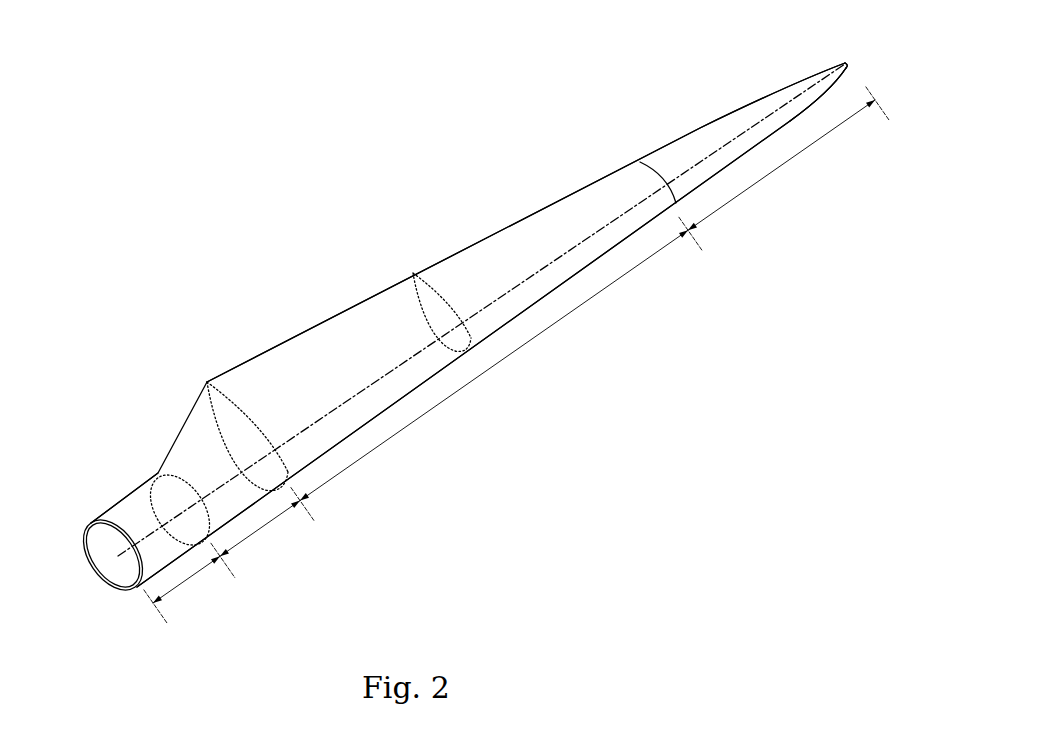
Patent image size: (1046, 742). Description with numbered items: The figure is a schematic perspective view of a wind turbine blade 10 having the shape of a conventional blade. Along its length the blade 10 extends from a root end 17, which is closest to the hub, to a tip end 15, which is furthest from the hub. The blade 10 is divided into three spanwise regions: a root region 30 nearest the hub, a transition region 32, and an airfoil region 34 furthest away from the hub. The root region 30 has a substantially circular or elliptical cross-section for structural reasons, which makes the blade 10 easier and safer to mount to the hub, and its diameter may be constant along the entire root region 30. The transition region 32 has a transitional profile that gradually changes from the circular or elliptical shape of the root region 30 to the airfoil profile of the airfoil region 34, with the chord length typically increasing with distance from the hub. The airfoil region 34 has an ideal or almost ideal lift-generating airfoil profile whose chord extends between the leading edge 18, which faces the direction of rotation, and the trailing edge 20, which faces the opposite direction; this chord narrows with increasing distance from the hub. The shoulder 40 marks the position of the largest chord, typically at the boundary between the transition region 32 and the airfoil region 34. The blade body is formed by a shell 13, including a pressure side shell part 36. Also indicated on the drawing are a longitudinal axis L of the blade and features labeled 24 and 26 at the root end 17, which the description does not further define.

The wind turbine blade 10 is at (334, 223).
The shell 13 is at (181, 432).
The tip end 15 is at (848, 65).
The root end 17 is at (88, 548).
The leading edge 18 is at (616, 246).
The trailing edge 20 is at (533, 213).
The root section 24 is at (109, 507).
The root end face / rim 26 is at (103, 579).
The root region 30 is at (187, 582).
The transition region 32 is at (262, 530).
The airfoil region 34 is at (533, 340).
The pressure side shell part 36 is at (767, 176).
The shoulder 40 is at (207, 380).
The longitudinal axis L is at (118, 556).